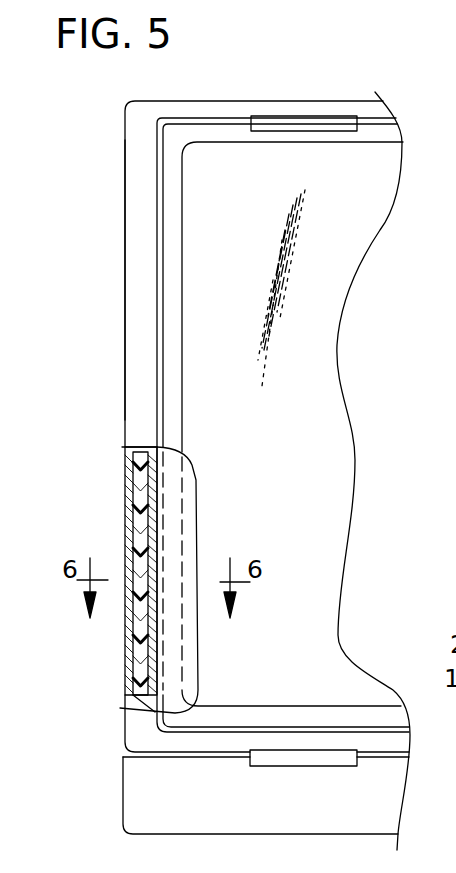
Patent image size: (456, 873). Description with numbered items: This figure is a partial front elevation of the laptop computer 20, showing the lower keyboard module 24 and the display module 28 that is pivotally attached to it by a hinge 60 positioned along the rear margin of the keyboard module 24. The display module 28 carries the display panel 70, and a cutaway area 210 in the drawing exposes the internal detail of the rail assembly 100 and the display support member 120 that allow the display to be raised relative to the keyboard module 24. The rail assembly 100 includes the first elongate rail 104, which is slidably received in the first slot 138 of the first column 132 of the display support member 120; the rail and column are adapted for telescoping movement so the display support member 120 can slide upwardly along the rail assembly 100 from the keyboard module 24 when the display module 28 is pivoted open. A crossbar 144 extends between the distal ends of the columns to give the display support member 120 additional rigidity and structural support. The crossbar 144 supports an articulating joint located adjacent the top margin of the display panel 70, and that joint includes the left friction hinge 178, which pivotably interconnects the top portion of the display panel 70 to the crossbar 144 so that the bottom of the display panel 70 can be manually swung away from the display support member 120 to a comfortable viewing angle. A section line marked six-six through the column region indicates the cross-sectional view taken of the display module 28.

The laptop computer 20 is at (368, 376).
The keyboard module 24 is at (103, 805).
The display module 28 is at (102, 156).
The hinge 60 is at (298, 758).
The display panel 70 is at (228, 222).
The rail assembly 100 is at (83, 699).
The first elongate rail 104 is at (137, 622).
The display support member 120 is at (116, 313).
The first column 132 is at (127, 418).
The first slot 138 is at (135, 650).
The crossbar 144 is at (190, 112).
The left friction hinge 178 is at (335, 120).
The cutaway area 210 is at (195, 480).